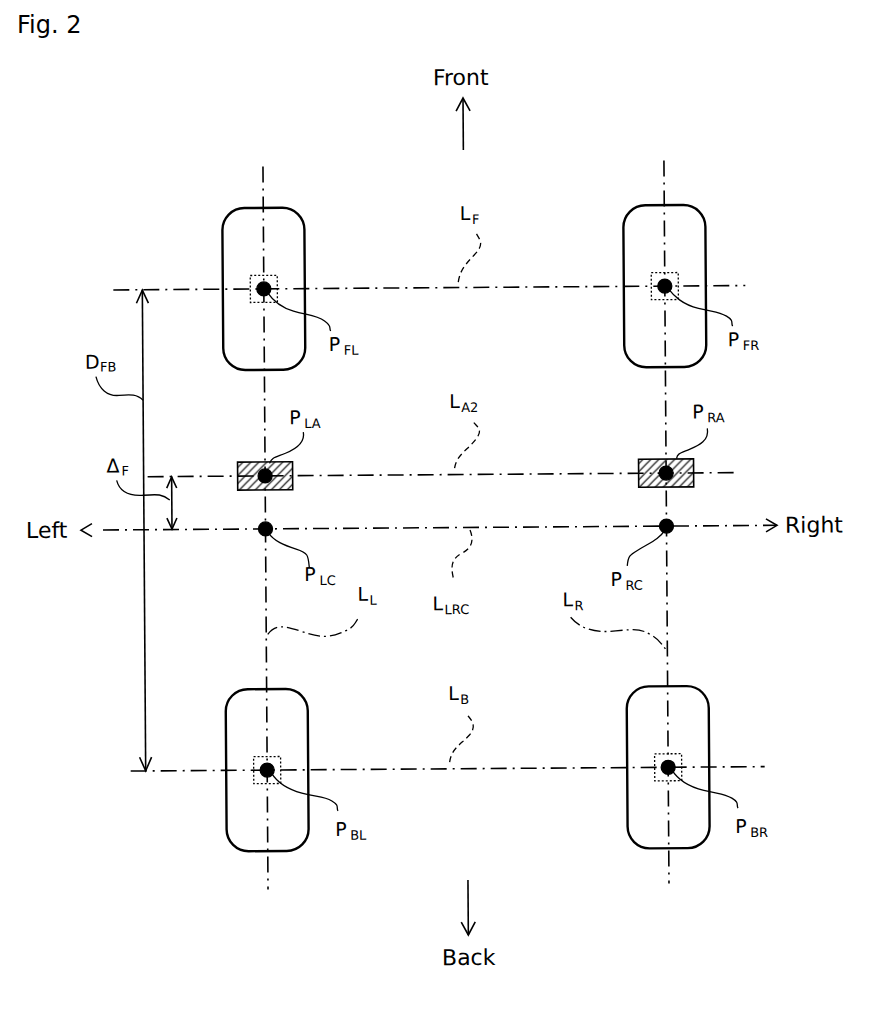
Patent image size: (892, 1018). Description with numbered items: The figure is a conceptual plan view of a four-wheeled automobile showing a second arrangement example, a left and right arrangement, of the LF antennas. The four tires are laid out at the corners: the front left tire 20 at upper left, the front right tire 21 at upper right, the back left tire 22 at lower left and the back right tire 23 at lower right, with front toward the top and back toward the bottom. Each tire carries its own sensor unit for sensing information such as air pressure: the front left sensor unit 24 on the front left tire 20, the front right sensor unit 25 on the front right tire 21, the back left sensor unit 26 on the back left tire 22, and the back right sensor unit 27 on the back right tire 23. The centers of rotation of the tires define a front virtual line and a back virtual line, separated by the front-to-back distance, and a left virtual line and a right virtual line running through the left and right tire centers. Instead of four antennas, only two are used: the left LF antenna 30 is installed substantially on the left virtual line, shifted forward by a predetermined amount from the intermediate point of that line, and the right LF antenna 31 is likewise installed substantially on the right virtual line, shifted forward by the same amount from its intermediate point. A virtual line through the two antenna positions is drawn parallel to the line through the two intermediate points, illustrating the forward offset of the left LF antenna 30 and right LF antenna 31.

The front left tire 20 is at (297, 212).
The front right tire 21 is at (698, 212).
The back left tire 22 is at (300, 690).
The back right tire 23 is at (700, 689).
The front left sensor unit 24 is at (276, 277).
The front right sensor unit 25 is at (655, 274).
The back left sensor unit 26 is at (280, 757).
The back right sensor unit 27 is at (682, 754).
The left LF antenna 30 is at (257, 461).
The right LF antenna 31 is at (658, 461).